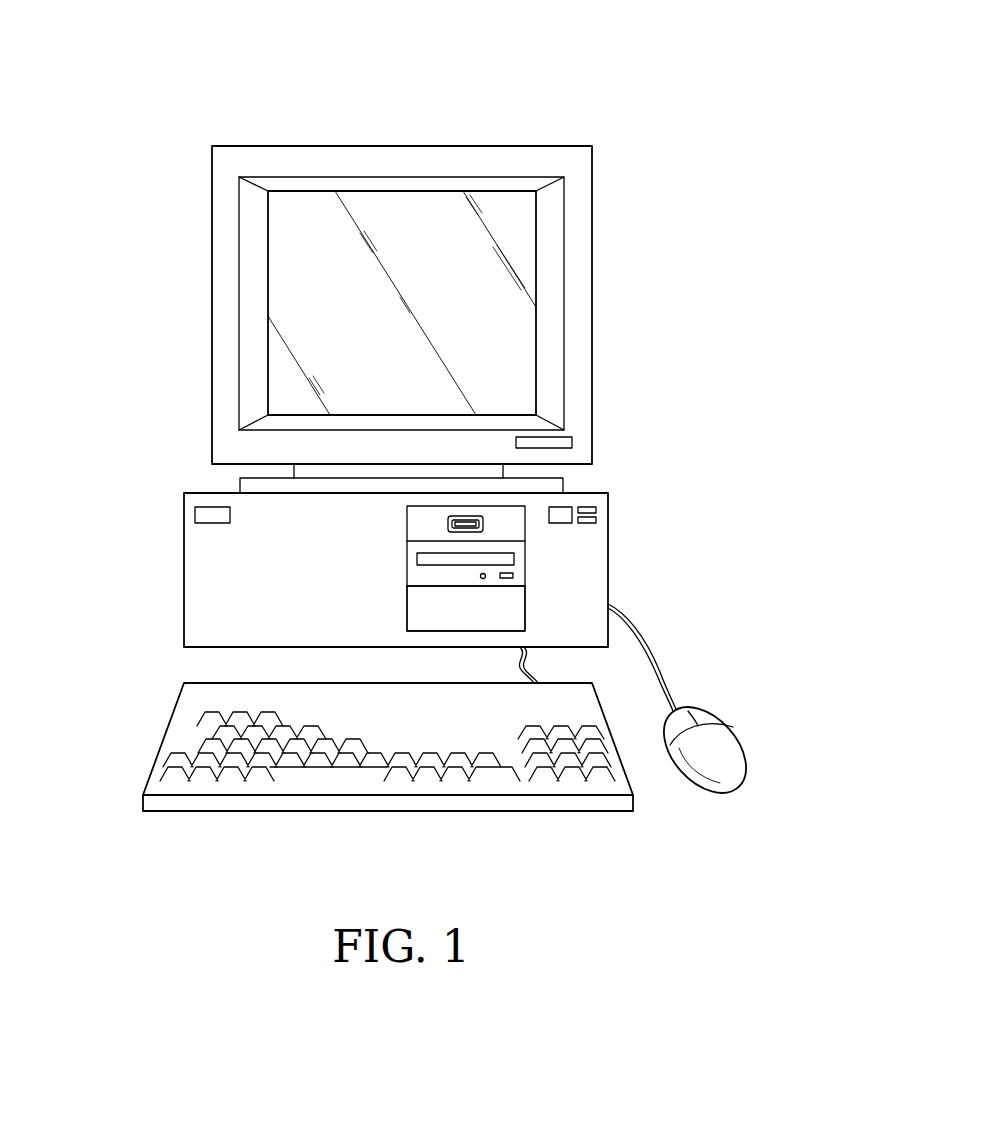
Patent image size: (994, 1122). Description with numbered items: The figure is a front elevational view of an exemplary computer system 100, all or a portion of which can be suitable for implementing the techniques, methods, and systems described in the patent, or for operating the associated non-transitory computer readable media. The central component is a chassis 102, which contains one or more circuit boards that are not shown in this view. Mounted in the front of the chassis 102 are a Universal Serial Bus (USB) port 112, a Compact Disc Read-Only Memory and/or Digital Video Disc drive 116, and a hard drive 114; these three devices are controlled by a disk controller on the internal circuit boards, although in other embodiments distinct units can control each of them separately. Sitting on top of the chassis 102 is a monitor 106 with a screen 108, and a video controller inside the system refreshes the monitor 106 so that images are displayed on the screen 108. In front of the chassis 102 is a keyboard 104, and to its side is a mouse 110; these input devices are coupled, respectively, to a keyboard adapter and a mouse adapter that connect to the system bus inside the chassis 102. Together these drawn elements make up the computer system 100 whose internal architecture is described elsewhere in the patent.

The computer system 100 is at (584, 123).
The chassis 102 is at (183, 573).
The keyboard 104 is at (167, 732).
The monitor 106 is at (290, 146).
The screen 108 is at (317, 305).
The mouse 110 is at (725, 740).
The Universal Serial Bus (USB) port 112 is at (485, 518).
The hard drive 114 is at (525, 609).
The CD-ROM and/or DVD drive 116 is at (525, 566).